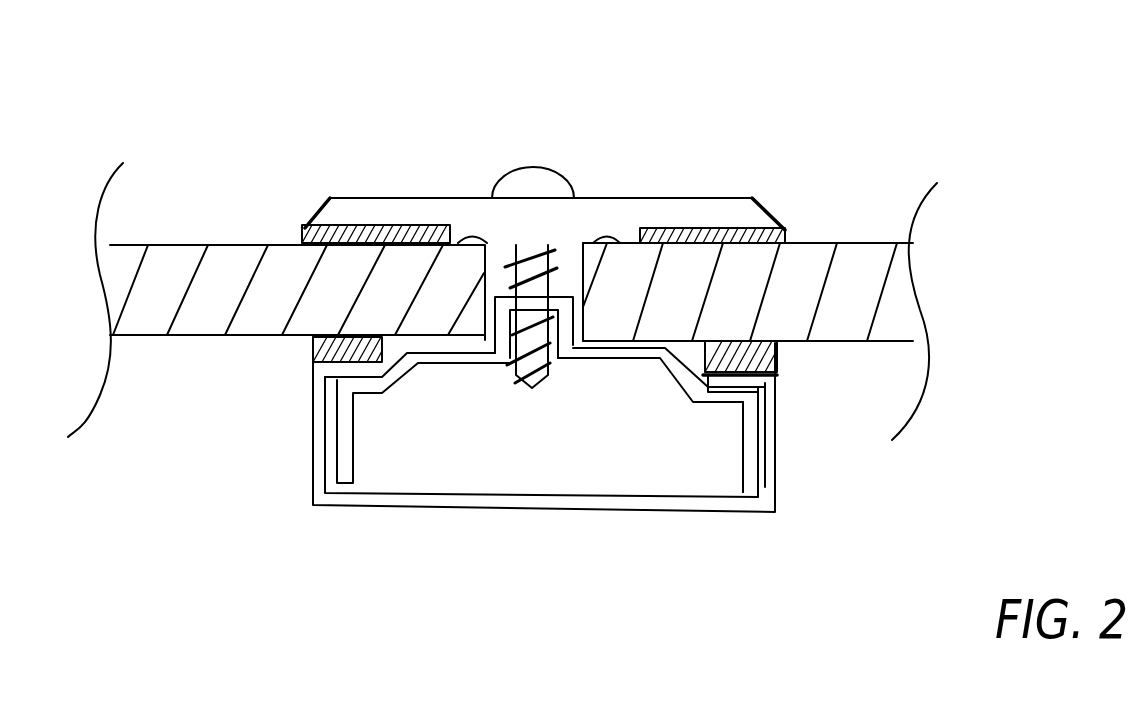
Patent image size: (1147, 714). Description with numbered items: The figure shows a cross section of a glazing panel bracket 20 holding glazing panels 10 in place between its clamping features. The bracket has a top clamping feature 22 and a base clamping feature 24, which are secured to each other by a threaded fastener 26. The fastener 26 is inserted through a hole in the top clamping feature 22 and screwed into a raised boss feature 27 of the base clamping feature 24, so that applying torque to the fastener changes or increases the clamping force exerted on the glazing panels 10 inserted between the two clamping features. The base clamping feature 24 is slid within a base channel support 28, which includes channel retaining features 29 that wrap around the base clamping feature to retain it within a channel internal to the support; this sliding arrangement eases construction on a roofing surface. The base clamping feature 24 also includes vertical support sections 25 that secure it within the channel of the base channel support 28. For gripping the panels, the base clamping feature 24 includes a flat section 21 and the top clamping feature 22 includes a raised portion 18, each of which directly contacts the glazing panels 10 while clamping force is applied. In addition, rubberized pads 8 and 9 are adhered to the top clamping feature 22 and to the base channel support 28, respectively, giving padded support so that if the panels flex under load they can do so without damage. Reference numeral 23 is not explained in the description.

The glazing panel bracket 20 is at (313, 93).
The glazing panels 10 is at (827, 238).
The raised portion 18 is at (630, 233).
The rubberized pad 8 is at (385, 228).
The threaded fastener 26 is at (527, 173).
The raised boss feature 27 is at (575, 258).
The channel 23 is at (697, 230).
The top clamping feature 22 is at (605, 212).
The base channel support 28 is at (528, 500).
The base clamping feature 24 is at (765, 445).
The vertical support sections 25 is at (775, 397).
The channel retaining features 29 is at (773, 360).
The rubberized pad 9 is at (313, 343).
The flat section 21 is at (622, 343).